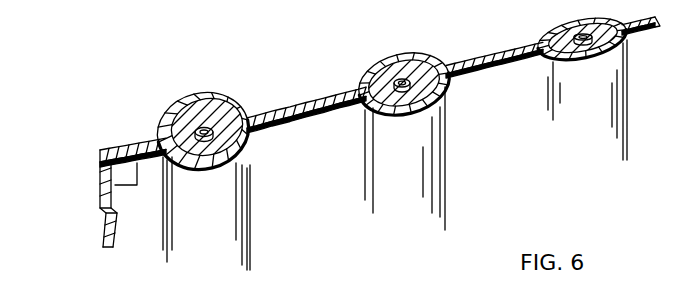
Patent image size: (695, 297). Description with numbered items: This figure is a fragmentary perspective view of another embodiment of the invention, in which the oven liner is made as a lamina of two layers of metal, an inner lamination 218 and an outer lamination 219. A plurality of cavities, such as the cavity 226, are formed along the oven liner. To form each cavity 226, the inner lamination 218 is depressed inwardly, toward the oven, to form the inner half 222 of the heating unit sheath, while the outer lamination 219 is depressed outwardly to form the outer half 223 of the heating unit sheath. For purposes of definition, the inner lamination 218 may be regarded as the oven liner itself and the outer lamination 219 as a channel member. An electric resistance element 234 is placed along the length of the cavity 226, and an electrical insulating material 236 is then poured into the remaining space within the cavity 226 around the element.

The inner lamination 218 is at (135, 142).
The outer lamination 219 is at (137, 185).
The inner half of the heating unit sheath 222 is at (215, 101).
The outer half of the heating unit sheath 223 is at (248, 147).
The cavity 226 is at (237, 117).
The electric resistance element 234 is at (200, 125).
The electrical insulating material 236 is at (205, 153).